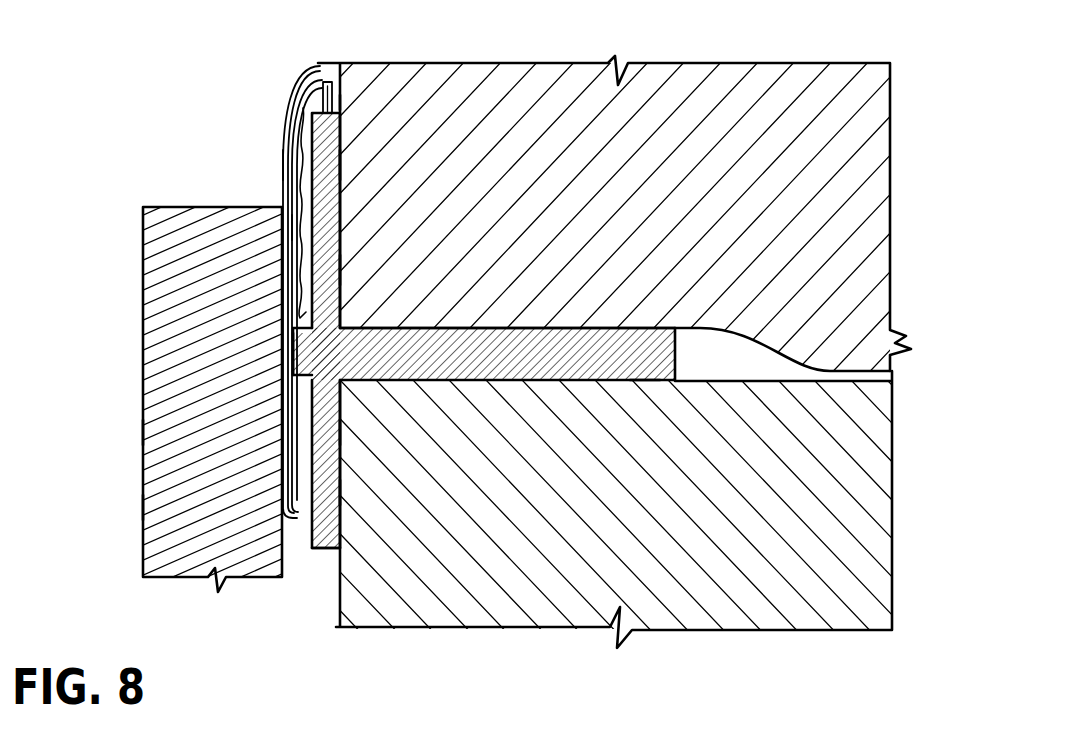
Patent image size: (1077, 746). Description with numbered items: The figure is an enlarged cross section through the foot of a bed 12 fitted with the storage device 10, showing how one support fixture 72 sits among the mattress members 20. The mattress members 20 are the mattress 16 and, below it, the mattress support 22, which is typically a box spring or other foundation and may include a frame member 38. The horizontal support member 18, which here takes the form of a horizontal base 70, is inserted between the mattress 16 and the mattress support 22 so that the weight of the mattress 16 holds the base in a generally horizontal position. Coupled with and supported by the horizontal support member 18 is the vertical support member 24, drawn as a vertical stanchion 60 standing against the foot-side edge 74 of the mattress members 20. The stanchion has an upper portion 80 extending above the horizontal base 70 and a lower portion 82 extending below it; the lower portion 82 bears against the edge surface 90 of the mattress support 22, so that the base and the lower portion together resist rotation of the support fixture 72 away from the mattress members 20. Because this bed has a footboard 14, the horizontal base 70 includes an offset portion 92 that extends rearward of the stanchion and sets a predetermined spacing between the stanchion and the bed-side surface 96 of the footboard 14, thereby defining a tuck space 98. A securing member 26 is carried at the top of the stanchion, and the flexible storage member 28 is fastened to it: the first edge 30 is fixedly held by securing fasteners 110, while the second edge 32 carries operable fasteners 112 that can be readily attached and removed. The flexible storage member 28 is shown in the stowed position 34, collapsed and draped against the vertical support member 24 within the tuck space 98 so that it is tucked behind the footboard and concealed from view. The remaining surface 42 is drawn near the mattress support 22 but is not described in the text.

The storage device 10 is at (140, 120).
The bed 12 is at (762, 55).
The footboard 14 is at (138, 329).
The mattress 16 is at (818, 180).
The horizontal support member 18 is at (476, 390).
The mattress members 20 is at (848, 338).
The mattress support 22 is at (830, 450).
The vertical support member 24 is at (337, 235).
The securing member 26 is at (333, 62).
The flexible storage member 28 is at (293, 227).
The first edge 30 is at (341, 102).
The second edge 32 is at (320, 90).
The stowed position 34 is at (276, 162).
The frame member 38 is at (138, 435).
The lower surface of second body 42 is at (143, 507).
The vertical stanchion 60 is at (340, 270).
The horizontal base 70 is at (645, 364).
The support fixture 72 is at (331, 569).
The foot-side edge 74 is at (182, 99).
The upper portion 80 is at (349, 163).
The lower portion 82 is at (343, 492).
The edge surface 90 is at (342, 432).
The offset portion 92 is at (294, 333).
The bed-side surface 96 is at (290, 542).
The tuck space 98 is at (296, 203).
The securing fasteners 110 is at (300, 113).
The operable fasteners 112 is at (336, 88).